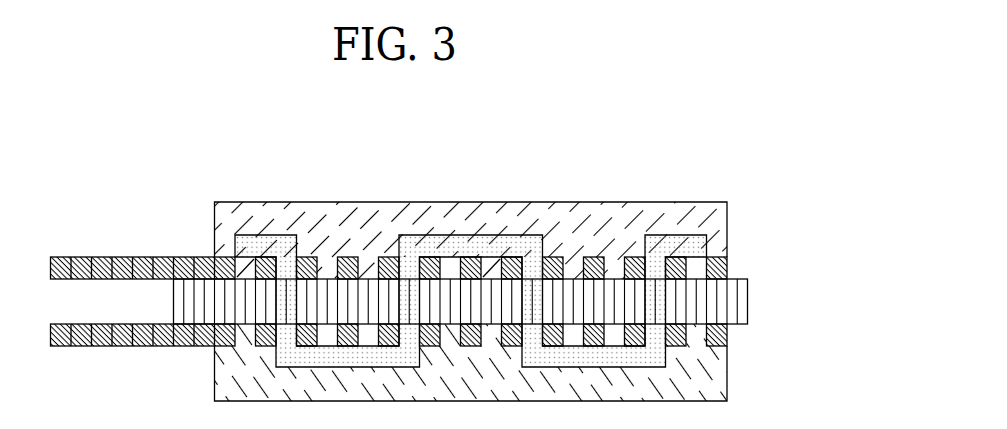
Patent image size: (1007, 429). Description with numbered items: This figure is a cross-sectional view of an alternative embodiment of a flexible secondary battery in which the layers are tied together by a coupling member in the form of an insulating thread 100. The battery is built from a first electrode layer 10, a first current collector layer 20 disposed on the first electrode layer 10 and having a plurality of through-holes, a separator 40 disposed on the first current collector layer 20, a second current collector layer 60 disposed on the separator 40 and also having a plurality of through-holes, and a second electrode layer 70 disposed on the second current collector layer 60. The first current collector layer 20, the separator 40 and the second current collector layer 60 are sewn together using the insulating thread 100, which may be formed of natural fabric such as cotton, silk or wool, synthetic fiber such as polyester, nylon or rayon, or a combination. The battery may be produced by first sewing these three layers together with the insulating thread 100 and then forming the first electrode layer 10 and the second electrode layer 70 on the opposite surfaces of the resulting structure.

The first electrode layer 10 is at (723, 370).
The first current collector layer 20 is at (723, 338).
The separator 40 is at (745, 303).
The second current collector layer 60 is at (723, 268).
The second electrode layer 70 is at (723, 237).
The insulating thread 100 is at (675, 242).